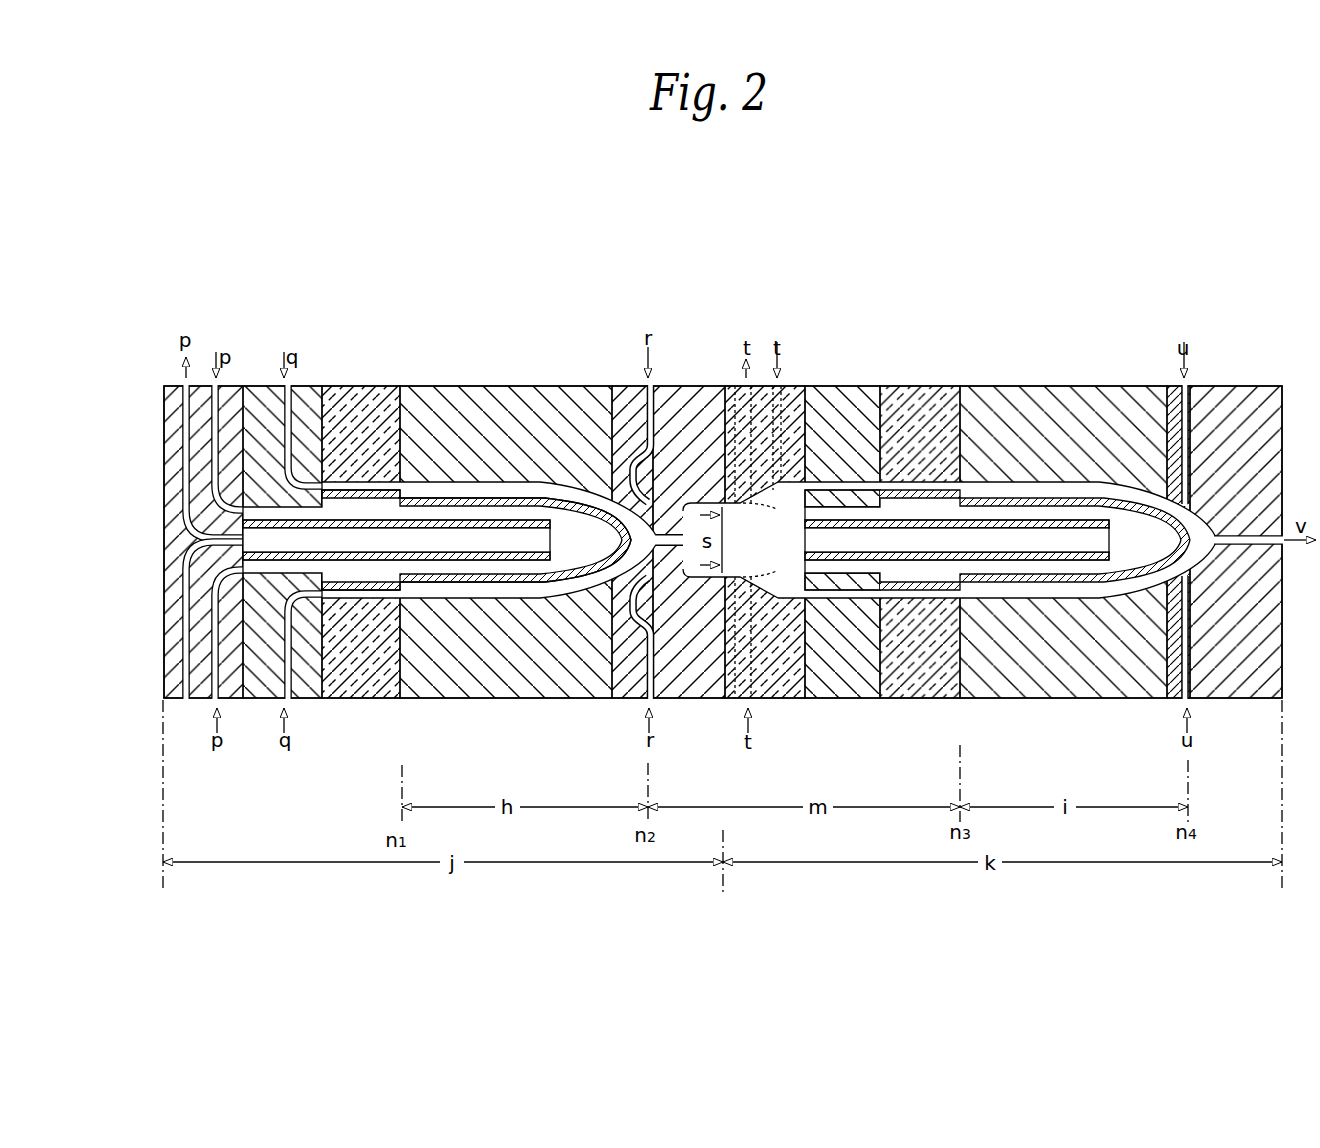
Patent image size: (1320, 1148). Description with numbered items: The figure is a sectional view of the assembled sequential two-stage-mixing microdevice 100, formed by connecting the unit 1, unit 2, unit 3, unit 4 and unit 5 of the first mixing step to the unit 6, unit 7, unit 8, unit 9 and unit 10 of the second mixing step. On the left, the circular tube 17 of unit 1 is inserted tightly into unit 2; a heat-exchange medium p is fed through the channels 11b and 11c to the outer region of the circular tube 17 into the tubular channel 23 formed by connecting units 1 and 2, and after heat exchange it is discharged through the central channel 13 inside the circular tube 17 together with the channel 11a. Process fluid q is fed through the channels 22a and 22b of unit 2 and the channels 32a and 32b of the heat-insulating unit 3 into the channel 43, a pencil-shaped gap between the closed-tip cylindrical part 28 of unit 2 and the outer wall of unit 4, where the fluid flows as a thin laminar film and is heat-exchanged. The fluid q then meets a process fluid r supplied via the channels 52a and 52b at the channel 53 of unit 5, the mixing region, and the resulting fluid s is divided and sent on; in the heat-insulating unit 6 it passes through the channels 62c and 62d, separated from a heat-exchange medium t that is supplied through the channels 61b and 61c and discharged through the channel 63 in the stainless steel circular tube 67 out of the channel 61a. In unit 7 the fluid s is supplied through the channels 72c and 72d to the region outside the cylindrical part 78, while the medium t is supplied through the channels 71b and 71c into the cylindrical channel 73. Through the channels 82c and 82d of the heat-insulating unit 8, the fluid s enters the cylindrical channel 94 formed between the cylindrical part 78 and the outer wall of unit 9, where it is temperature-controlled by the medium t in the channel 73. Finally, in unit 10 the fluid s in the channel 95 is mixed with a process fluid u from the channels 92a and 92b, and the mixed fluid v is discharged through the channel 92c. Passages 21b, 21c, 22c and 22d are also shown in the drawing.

The unit 1 is at (203, 385).
The unit 2 is at (265, 385).
The unit 3 is at (360, 385).
The unit 4 is at (518, 385).
The unit 5 is at (672, 385).
The unit 6 is at (755, 385).
The unit 7 is at (855, 385).
The unit 8 is at (920, 385).
The unit 9 is at (1062, 385).
The unit 10 is at (1215, 385).
The sequential two-stage-mixing microdevice 100 is at (1248, 374).
The channel 11a is at (172, 385).
The channel 11b is at (203, 385).
The channel 11c is at (197, 700).
The channel 13 is at (432, 552).
The circular tube 17 is at (435, 519).
The upper second passage 21b is at (253, 385).
The lower second passage 21c is at (253, 700).
The channel 22a is at (294, 466).
The channel 22b is at (307, 700).
The chamber upper wall 22c is at (692, 501).
The chamber lower wall 22d is at (696, 579).
The tubular channel 23 is at (470, 561).
The cylindrical part 28 is at (482, 497).
The channel 32a is at (372, 484).
The channel 32b is at (372, 596).
The microchannel 43 is at (545, 583).
The channel 52a is at (627, 385).
The channel 52b is at (670, 700).
The channel (mixing region) 53 is at (596, 598).
The channel 61a is at (735, 385).
The channel 61b is at (793, 385).
The channel 61c is at (765, 700).
The channel 62c is at (745, 500).
The channel 62d is at (795, 700).
The channel 63 is at (905, 560).
The circular tube 67 is at (985, 520).
The channel 71b is at (827, 507).
The channel 71c is at (830, 574).
The channel 72c is at (848, 489).
The channel 72d is at (852, 591).
The cylindrical channel 73 is at (1030, 570).
The cylindrical part 78 is at (1030, 498).
The channel 82c is at (940, 489).
The channel 82d is at (935, 591).
The channel 92a is at (1173, 385).
The channel 92b is at (1195, 583).
The channel 92c is at (1250, 546).
The cylindrical channel 94 is at (1090, 597).
The channel (mixing region) 95 is at (1202, 547).